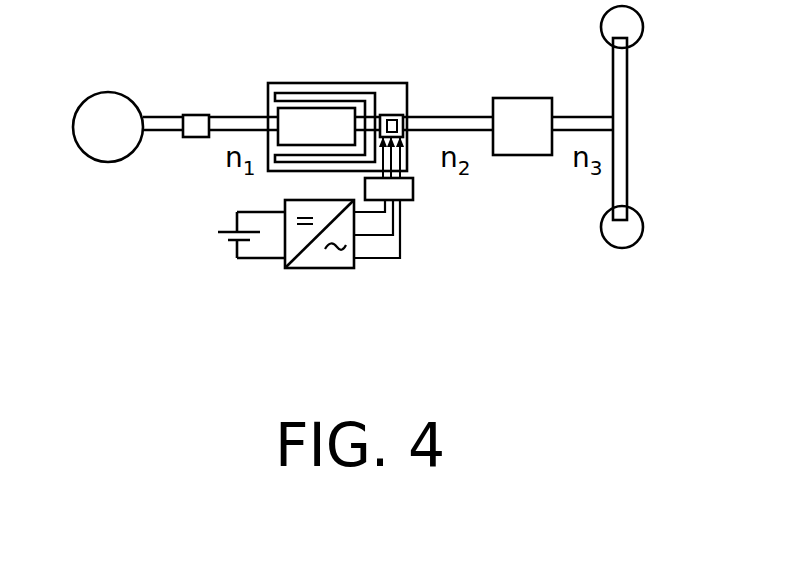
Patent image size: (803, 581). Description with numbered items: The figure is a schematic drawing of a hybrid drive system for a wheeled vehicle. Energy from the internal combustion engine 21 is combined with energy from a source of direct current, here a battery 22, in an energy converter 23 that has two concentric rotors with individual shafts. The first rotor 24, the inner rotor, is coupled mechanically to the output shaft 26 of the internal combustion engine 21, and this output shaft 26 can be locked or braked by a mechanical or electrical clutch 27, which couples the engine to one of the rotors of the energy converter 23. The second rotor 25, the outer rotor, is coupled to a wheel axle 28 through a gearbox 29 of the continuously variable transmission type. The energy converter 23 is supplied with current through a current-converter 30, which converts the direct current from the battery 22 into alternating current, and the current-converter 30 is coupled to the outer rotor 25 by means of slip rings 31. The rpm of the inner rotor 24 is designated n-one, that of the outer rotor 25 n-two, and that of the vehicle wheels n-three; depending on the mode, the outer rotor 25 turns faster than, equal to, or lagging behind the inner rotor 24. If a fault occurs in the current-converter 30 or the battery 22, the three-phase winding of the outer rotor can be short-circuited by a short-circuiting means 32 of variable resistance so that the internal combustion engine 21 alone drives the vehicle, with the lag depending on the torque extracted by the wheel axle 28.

The internal combustion engine 21 is at (105, 92).
The battery 22 is at (228, 228).
The energy converter 23 is at (352, 83).
The first rotor 24 is at (313, 131).
The second rotor 25 is at (303, 96).
The output shaft 26 is at (153, 116).
The clutch 27 is at (204, 114).
The wheel axle 28 is at (627, 97).
The gearbox 29 is at (520, 98).
The current-converter 30 is at (320, 268).
The slip rings 31 is at (393, 115).
The short-circuiting means 32 is at (413, 188).